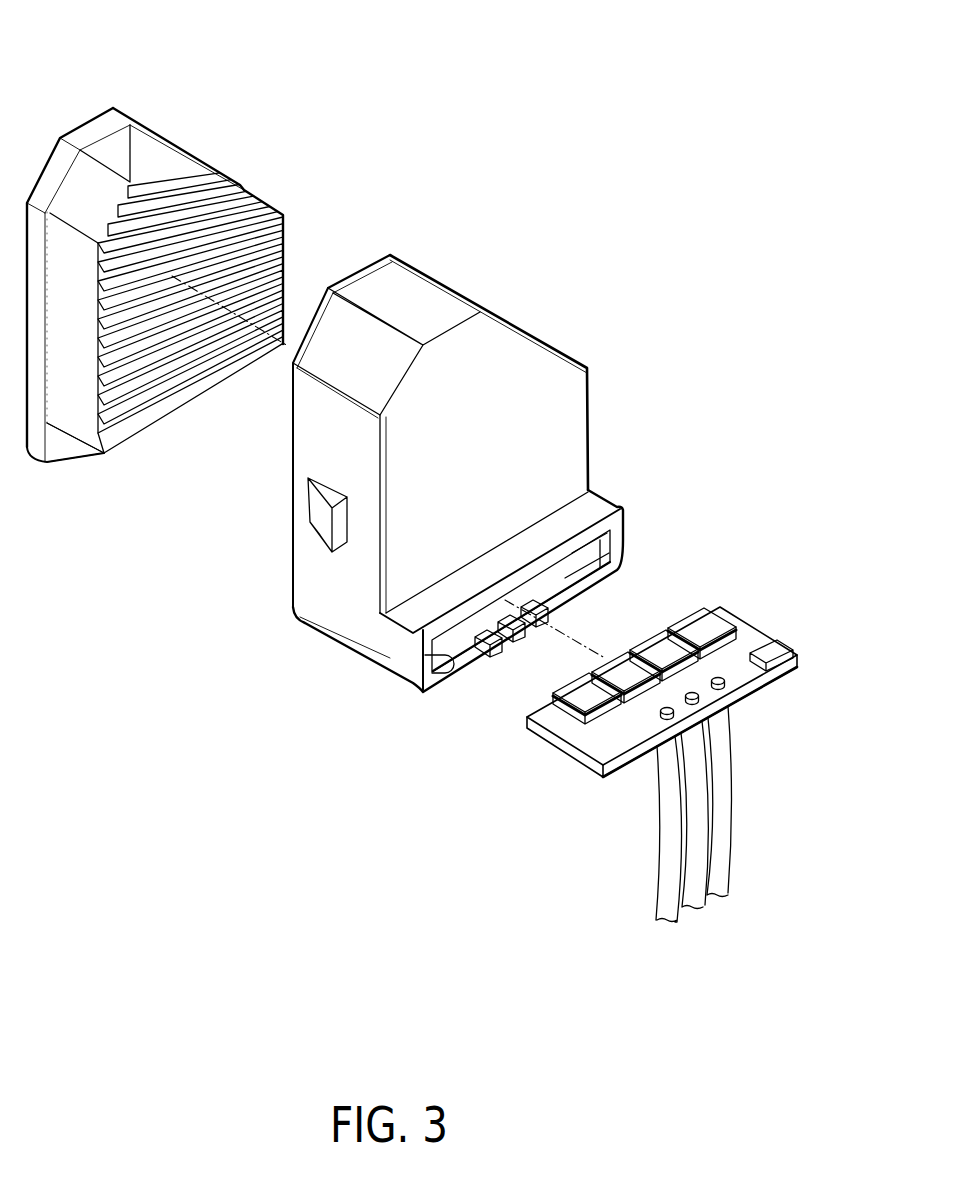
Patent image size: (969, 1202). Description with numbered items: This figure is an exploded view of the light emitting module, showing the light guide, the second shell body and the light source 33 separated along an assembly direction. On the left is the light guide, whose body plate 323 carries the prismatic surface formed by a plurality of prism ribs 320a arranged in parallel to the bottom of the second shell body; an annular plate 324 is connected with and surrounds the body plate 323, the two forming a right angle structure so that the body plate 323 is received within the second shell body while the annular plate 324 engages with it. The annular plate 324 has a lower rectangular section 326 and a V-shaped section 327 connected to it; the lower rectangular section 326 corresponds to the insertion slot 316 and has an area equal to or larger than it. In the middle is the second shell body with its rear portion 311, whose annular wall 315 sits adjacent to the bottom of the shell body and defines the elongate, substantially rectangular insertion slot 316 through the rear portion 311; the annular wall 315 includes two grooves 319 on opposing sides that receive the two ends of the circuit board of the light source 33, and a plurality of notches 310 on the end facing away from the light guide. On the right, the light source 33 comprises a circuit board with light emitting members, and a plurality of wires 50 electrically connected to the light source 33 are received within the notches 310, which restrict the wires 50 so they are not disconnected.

The body plate 323 is at (133, 150).
The annular plate 324 is at (150, 602).
The lower rectangular section 326 is at (73, 447).
The V-shaped section 327 is at (47, 395).
The prism ribs 320a is at (294, 360).
The rear portion 311 is at (533, 401).
The annular wall 315 is at (388, 658).
The grooves 319 is at (453, 688).
The insertion slot 316 is at (456, 646).
The notches 310 is at (492, 653).
The light source 33 is at (752, 594).
The wires 50 is at (672, 825).